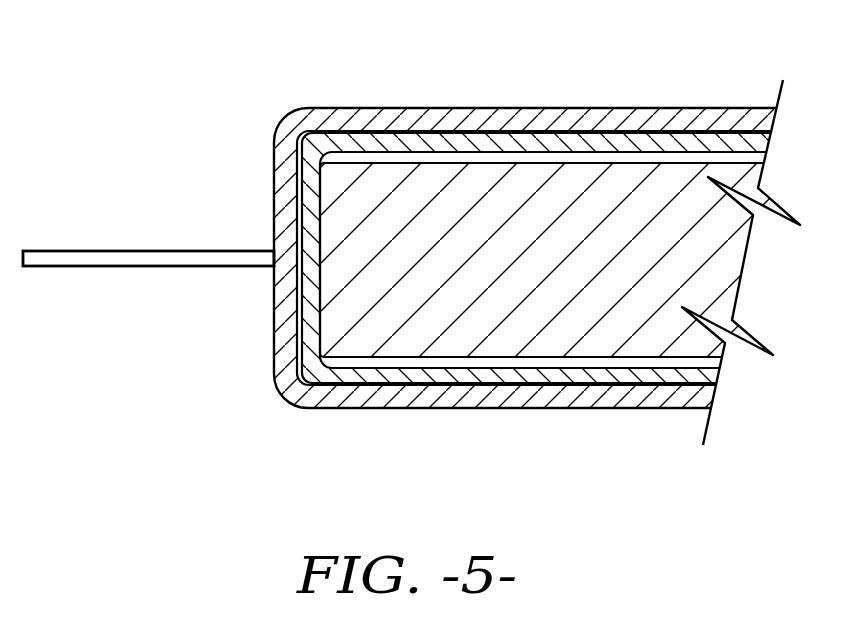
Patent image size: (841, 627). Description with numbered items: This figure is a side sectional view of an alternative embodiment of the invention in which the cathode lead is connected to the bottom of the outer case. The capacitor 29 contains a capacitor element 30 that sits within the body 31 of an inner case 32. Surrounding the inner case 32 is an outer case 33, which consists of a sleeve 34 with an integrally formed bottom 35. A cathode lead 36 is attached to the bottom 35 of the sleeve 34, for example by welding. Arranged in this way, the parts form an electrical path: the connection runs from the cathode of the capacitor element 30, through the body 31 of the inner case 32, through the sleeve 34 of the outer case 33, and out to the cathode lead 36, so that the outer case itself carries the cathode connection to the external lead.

The capacitor 29 is at (567, 78).
The capacitor element 30 is at (485, 200).
The body 31 is at (445, 373).
The inner case 32 is at (280, 293).
The outer case 33 is at (283, 122).
The sleeve 34 is at (390, 120).
The bottom 35 is at (279, 187).
The cathode lead 36 is at (165, 250).